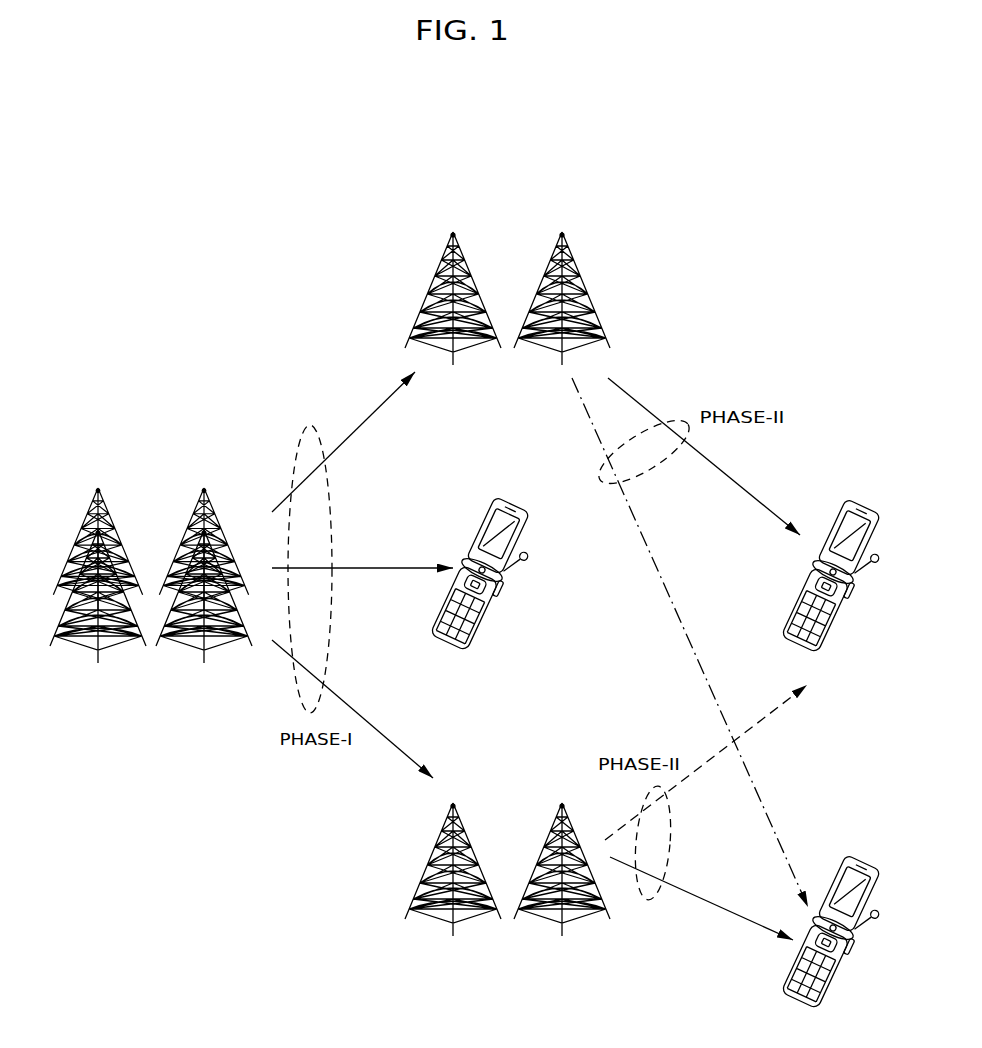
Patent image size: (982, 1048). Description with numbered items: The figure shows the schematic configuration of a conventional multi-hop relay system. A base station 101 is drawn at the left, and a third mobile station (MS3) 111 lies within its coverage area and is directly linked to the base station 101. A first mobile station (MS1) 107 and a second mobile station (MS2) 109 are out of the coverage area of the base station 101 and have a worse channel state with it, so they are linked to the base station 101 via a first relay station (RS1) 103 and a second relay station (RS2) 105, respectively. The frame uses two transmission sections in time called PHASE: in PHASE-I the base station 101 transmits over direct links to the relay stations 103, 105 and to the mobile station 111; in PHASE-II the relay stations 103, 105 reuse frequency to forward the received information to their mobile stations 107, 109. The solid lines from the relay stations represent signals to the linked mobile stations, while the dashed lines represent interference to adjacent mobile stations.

The base station 101 is at (151, 595).
The relay station 1 (RS1) 103 is at (507, 315).
The relay station 2 (RS2) 105 is at (507, 887).
The mobile station 1 (MS1) 107 is at (835, 584).
The mobile station 2 (MS2) 109 is at (835, 942).
The mobile station 3 (MS3) 111 is at (485, 583).